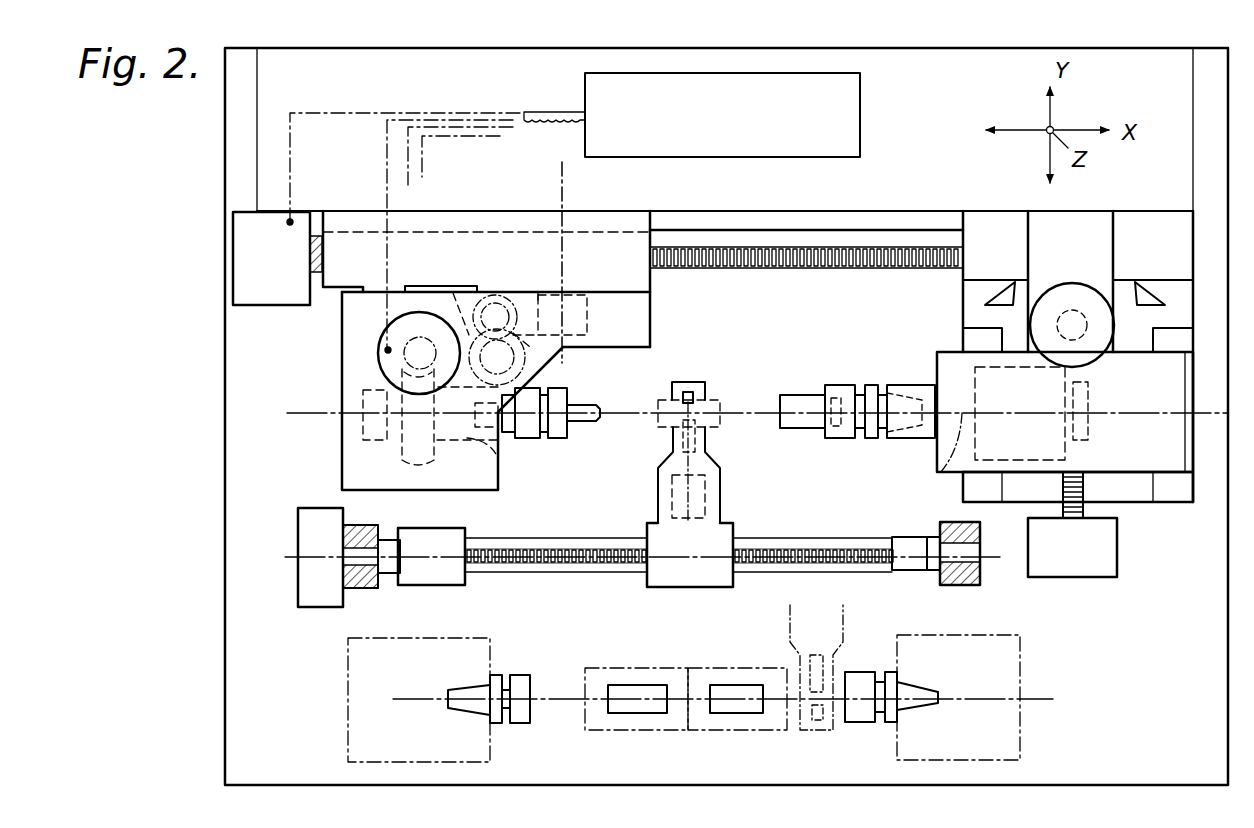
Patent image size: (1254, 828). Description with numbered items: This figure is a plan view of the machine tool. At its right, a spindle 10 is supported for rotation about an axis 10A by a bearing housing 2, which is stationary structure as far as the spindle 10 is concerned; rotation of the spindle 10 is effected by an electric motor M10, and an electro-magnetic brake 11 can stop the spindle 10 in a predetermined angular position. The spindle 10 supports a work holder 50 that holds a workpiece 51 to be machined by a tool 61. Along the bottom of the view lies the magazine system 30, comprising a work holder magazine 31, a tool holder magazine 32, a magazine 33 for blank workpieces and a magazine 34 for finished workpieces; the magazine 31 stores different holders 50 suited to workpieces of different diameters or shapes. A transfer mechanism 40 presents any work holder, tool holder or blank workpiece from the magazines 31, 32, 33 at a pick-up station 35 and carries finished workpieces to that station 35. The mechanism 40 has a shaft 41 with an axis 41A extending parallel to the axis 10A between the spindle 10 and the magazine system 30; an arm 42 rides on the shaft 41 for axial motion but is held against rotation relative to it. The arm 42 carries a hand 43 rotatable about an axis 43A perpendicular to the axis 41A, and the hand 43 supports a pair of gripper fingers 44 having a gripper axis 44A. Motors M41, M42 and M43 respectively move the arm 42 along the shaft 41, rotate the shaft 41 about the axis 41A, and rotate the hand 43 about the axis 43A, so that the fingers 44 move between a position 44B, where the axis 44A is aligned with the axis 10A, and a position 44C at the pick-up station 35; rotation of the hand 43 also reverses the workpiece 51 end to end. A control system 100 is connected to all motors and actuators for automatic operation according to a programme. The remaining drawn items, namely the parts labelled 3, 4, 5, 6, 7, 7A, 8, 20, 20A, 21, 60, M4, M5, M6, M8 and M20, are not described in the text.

The bearing housing 2 is at (940, 352).
The bed rail 3 is at (776, 198).
The headstock slide 4 is at (1133, 478).
The column 5 is at (975, 313).
The tool carriage 6 is at (428, 481).
The cross slide 7 is at (641, 280).
The cross slide axis 7A is at (562, 201).
The longitudinal slide 8 is at (502, 240).
The spindle 10 is at (908, 387).
The spindle axis 10A is at (953, 443).
The electro-magnetic brake 11 is at (1090, 433).
The collet chuck 20 is at (494, 457).
The workpiece axis 20A is at (321, 411).
The collet 21 is at (363, 455).
The magazine system 30 is at (1073, 698).
The work holder magazine 31 is at (1017, 650).
The tool holder magazine 32 is at (345, 670).
The magazine for blank workpieces 33 is at (663, 665).
The magazine for finished workpieces 34 is at (738, 665).
The pick-up station 35 is at (880, 740).
The transfer mechanism 40 is at (707, 592).
The shaft 41 is at (833, 541).
The shaft axis 41A is at (923, 552).
The arm 42 is at (655, 578).
The hand 43 is at (673, 445).
The hand axis 43A is at (705, 495).
The gripper fingers 44 is at (706, 392).
The gripper axis 44A is at (722, 425).
The finger position 44B is at (690, 383).
The finger position 44C is at (800, 731).
The work holder 50 is at (845, 393).
The workpiece 51 is at (801, 395).
The tool spindle 60 is at (565, 392).
The tool 61 is at (584, 426).
The control system 100 is at (862, 121).
The headstock slide motor M4 is at (1090, 568).
The column motor M5 is at (1072, 288).
The carriage motor M6 is at (462, 310).
The longitudinal slide motor M8 is at (283, 275).
The electric motor M10 is at (957, 471).
The collet chuck motor M20 is at (388, 350).
The motor M41 is at (306, 603).
The motor M42 is at (410, 585).
The motor M43 is at (688, 502).